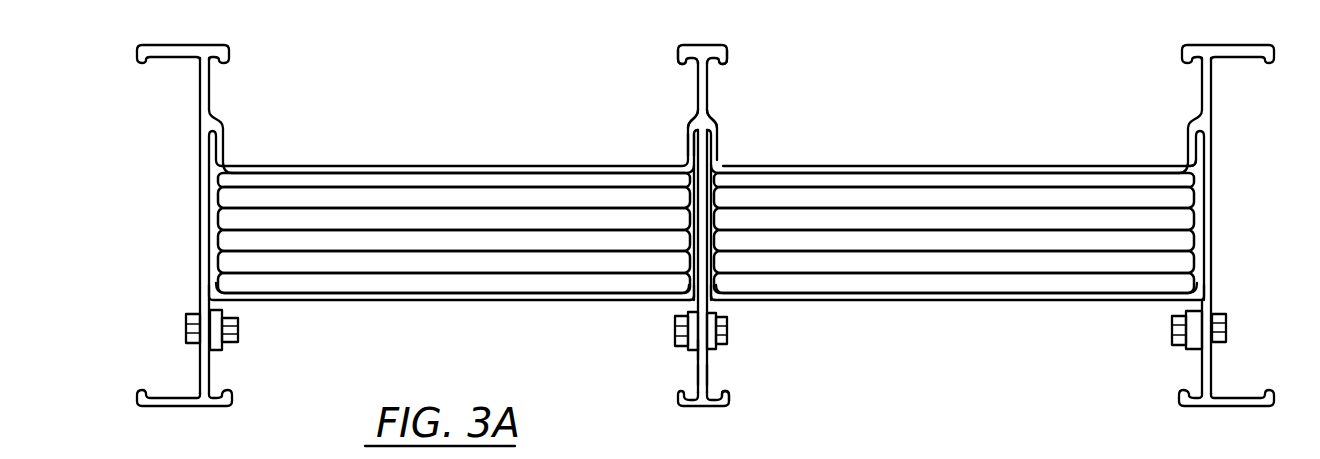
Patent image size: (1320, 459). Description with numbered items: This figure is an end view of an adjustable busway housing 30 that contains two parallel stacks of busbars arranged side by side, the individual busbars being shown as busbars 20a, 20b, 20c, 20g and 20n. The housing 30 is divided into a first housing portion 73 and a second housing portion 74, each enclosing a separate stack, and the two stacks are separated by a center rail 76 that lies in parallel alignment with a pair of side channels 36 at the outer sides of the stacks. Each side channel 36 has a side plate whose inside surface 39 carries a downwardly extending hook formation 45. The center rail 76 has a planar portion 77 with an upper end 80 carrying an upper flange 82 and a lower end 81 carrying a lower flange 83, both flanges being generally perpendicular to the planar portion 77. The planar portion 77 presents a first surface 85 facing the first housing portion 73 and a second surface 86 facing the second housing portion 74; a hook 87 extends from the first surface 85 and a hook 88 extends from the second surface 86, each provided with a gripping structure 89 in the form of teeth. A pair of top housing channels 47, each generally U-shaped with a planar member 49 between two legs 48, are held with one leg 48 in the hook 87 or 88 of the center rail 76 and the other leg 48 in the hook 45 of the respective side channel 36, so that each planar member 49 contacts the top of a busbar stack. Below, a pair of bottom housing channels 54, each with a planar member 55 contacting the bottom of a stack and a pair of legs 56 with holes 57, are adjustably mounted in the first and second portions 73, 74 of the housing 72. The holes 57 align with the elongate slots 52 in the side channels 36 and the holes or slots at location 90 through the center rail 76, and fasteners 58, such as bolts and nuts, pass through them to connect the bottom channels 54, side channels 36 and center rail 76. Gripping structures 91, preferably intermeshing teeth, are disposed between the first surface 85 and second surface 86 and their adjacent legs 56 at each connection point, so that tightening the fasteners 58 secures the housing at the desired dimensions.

The busbar 20a is at (526, 197).
The busbar 20b is at (453, 230).
The busbar 20c is at (397, 243).
The busbar 20g is at (467, 183).
The busbar 20n is at (509, 262).
The busway housing 30 is at (513, 40).
The side channel 36 is at (163, 44).
The inside surface 39 is at (212, 72).
The hook formation 45 is at (225, 150).
The top housing channel 47 is at (395, 138).
The leg 48 is at (200, 147).
The planar member 49 is at (423, 167).
The elongate slot 52 is at (200, 357).
The bottom housing channel 54 is at (340, 299).
The planar member 55 is at (1030, 299).
The leg 56 is at (212, 356).
The hole 57 is at (677, 329).
The fastener 58 is at (185, 321).
The housing 72 is at (1034, 78).
The first housing portion 73 is at (335, 133).
The second housing portion 74 is at (1031, 105).
The center rail 76 is at (729, 42).
The planar portion 77 is at (709, 380).
The upper end 80 is at (712, 63).
The lower end 81 is at (709, 387).
The upper flange 82 is at (680, 47).
The lower flange 83 is at (716, 405).
The first surface 85 is at (697, 375).
The second surface 86 is at (714, 355).
The hook 87 is at (684, 148).
The hook 88 is at (721, 133).
The gripping structure 89 is at (702, 126).
The holes or elongate slots 90 is at (697, 353).
The gripping structure 91 is at (723, 303).